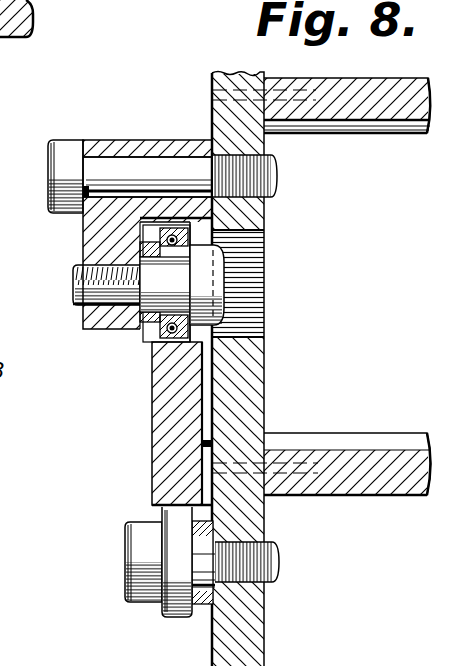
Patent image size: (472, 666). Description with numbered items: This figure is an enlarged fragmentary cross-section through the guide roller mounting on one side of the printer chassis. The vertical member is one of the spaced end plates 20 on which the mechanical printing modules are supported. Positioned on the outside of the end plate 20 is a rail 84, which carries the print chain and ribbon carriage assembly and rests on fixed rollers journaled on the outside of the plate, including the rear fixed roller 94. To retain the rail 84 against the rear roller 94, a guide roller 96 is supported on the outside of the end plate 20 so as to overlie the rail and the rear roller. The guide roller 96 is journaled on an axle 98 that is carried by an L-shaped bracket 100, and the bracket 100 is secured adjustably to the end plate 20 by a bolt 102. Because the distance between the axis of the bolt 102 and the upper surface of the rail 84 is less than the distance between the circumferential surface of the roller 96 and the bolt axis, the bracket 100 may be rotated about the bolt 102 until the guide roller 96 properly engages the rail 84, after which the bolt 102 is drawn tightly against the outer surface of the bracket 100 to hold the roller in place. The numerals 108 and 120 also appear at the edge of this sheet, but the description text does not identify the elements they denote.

The end plate 20 is at (232, 72).
The rail 84 is at (157, 415).
The rear fixed roller 94 is at (175, 607).
The guide roller 96 is at (158, 337).
The axle 98 is at (212, 287).
The L-shaped bracket 100 is at (90, 241).
The bolt 102 is at (62, 184).
The element 108 is at (18, 558).
The element 120 is at (18, 424).